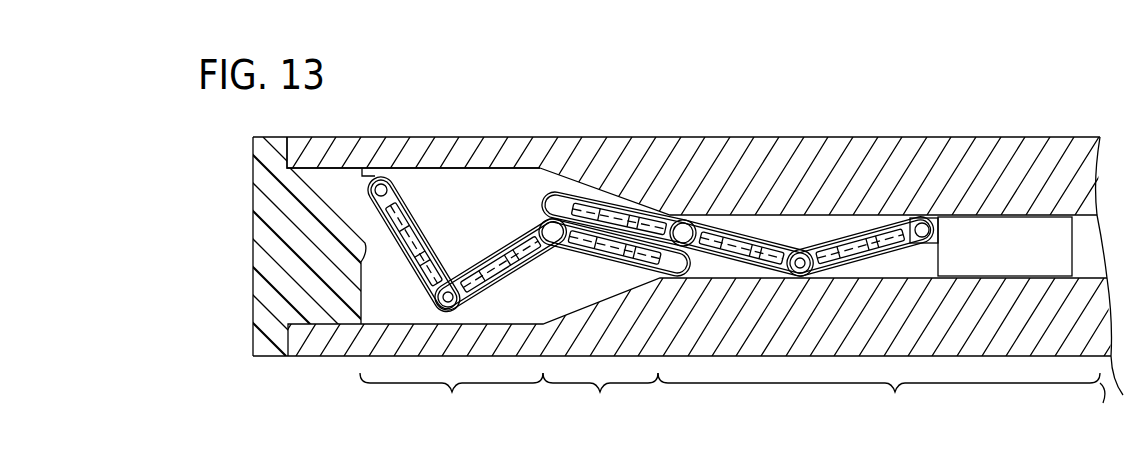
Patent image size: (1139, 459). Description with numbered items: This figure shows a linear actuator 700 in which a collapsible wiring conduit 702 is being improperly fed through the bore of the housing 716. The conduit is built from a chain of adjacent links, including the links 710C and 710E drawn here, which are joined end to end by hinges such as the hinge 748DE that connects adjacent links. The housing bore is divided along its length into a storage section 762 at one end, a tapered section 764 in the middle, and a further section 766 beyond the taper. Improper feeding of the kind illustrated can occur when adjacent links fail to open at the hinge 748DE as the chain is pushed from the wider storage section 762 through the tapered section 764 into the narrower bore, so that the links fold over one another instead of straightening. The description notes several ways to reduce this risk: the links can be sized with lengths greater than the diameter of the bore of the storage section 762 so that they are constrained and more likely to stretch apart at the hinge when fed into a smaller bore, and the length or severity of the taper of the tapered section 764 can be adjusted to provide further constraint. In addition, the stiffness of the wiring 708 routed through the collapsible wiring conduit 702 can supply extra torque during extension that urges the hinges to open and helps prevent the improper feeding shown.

The linear actuator 700 is at (885, 88).
The collapsible wiring conduit 702 is at (585, 110).
The housing 716 is at (655, 137).
The wiring 708 is at (690, 212).
The link 710E is at (540, 168).
The link 710C is at (578, 256).
The hinge 748DE is at (548, 205).
The storage section 762 is at (451, 397).
The tapered section 764 is at (600, 399).
The third region 766 is at (881, 398).